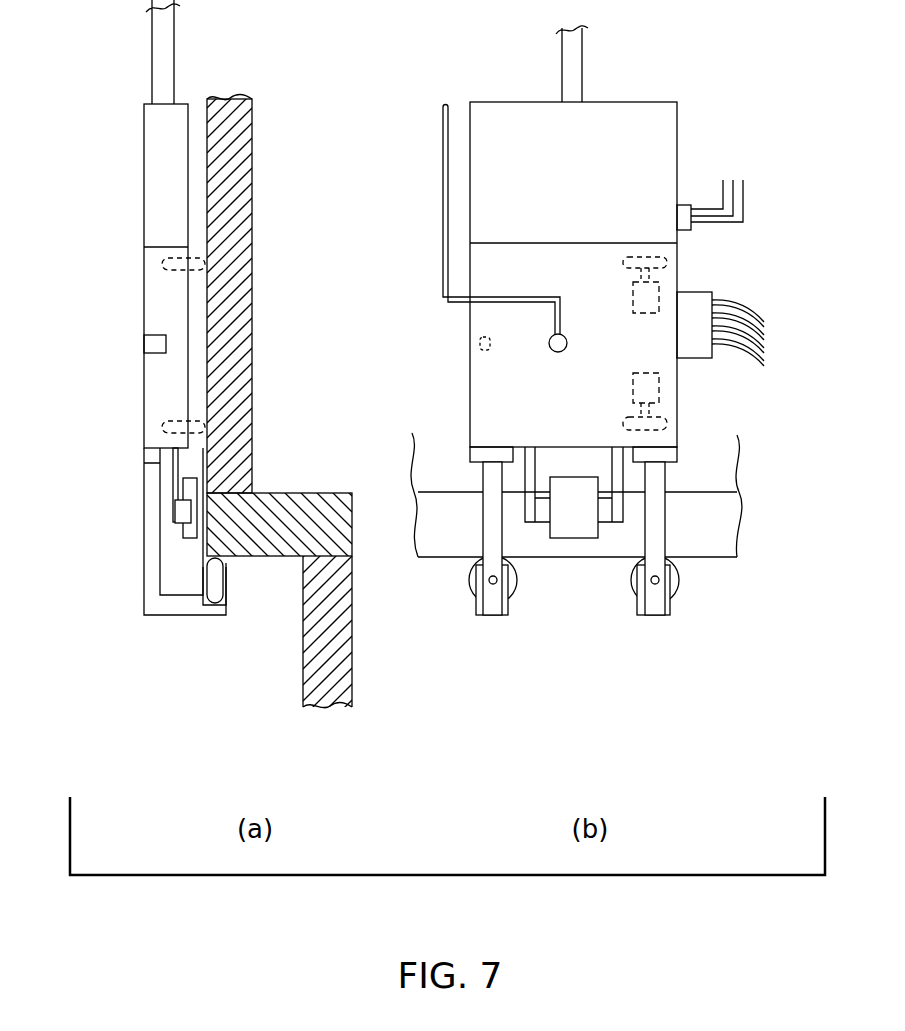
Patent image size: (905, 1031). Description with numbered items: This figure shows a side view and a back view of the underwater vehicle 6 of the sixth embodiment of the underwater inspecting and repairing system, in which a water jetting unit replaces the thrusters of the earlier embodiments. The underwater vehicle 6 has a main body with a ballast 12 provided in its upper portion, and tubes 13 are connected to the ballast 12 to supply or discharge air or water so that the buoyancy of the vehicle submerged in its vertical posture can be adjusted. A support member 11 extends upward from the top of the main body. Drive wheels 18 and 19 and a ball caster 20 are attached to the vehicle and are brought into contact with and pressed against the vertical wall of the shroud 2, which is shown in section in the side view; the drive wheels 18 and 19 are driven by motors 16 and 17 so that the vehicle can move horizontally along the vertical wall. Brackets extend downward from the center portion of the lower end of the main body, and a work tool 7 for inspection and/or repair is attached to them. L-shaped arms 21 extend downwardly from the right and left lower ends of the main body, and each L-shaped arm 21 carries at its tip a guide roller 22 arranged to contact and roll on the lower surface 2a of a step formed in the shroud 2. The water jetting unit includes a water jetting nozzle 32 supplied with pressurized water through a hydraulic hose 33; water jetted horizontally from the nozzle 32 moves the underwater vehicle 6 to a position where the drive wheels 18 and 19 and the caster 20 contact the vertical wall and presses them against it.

The shroud 2 is at (240, 192).
The lower surface of step 2a is at (270, 557).
The underwater vehicle 6 is at (119, 231).
The work tool 7 is at (192, 483).
The support rod 11 is at (175, 24).
The ballast 12 is at (178, 135).
The tubes 13 is at (710, 208).
The motor 16 is at (659, 286).
The motor 17 is at (659, 380).
The drive wheel 18 is at (207, 263).
The drive wheel 19 is at (207, 426).
The ball caster 20 is at (477, 342).
The L-shaped arm 21 is at (153, 577).
The guide roller 22 is at (215, 580).
The water jetting nozzle 32 is at (144, 343).
The hydraulic hose 33 is at (498, 303).